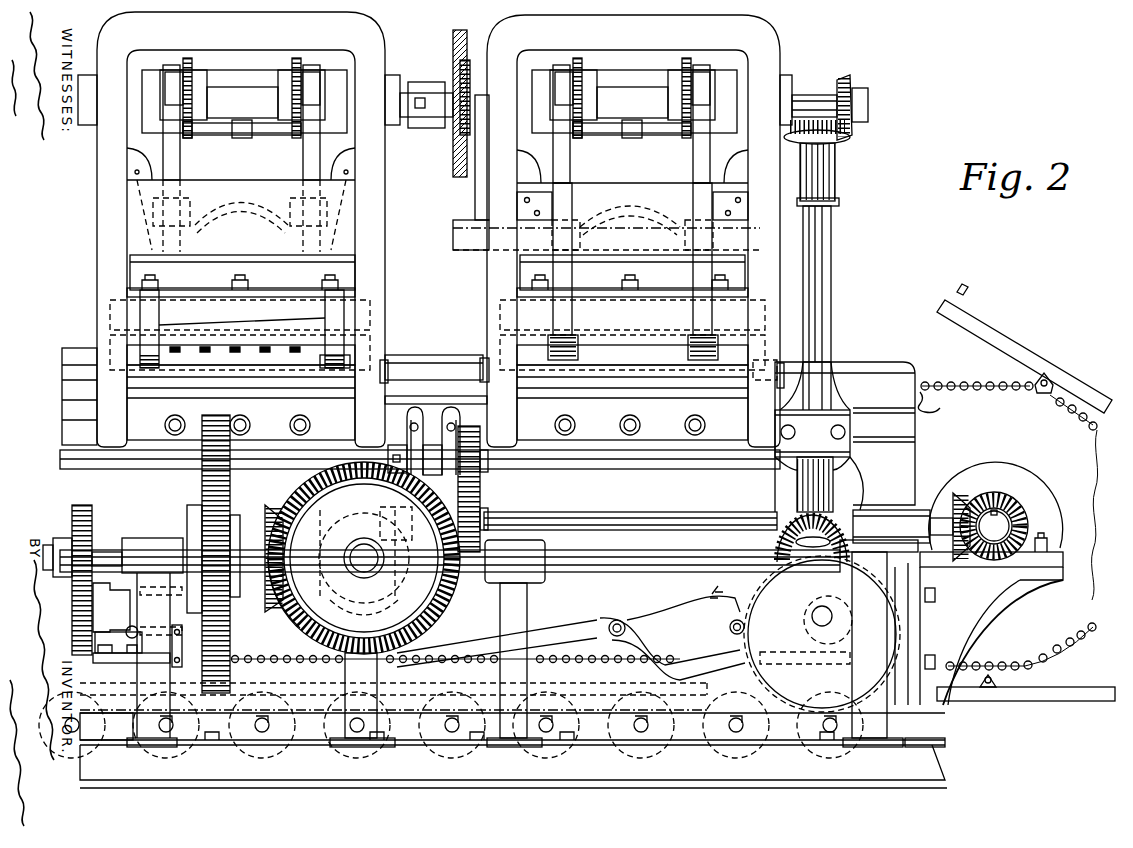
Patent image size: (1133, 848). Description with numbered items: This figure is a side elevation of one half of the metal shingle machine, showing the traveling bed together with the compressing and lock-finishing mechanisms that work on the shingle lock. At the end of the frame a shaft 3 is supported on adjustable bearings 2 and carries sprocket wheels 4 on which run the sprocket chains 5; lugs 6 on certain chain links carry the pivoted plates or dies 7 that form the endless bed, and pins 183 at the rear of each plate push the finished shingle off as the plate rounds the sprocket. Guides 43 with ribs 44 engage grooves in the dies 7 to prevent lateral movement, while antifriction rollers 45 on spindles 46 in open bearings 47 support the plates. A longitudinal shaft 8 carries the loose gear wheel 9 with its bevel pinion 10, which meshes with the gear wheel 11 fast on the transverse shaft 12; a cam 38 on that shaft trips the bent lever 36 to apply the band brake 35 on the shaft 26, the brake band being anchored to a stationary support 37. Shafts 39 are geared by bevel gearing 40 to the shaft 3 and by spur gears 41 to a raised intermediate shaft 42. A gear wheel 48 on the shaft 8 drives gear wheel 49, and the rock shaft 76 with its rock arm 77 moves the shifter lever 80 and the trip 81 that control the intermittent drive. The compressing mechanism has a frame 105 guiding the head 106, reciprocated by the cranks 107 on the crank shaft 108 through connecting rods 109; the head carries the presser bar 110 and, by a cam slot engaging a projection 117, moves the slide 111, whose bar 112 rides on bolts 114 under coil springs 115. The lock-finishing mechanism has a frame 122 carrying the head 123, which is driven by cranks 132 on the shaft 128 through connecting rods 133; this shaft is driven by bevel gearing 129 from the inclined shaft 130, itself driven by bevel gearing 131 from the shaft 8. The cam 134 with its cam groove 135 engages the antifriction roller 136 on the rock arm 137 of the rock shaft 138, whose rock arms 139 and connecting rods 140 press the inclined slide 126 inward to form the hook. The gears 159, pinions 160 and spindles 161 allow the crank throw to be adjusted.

The frame 105 is at (370, 35).
The cranks 107 is at (290, 68).
The crank shaft 108 is at (240, 87).
The gears 159 is at (189, 60).
The pinions 160 is at (190, 135).
The spindles 161 is at (266, 135).
The connecting rods 109 is at (305, 162).
The head 106 is at (355, 270).
The presser bar 110 is at (272, 300).
The bolts 114 is at (370, 320).
The bar 112 is at (176, 340).
The coil springs 115 is at (278, 372).
The projection 117 is at (336, 372).
The slide 111 is at (183, 380).
The antifriction roller 136 is at (452, 82).
The cam groove 135 is at (487, 42).
The cam 134 is at (453, 163).
The rock arm 137 is at (475, 198).
The ribs 44 is at (406, 357).
The guides 43 is at (436, 380).
The frame 122 is at (776, 40).
The cranks 132 is at (678, 68).
The shaft 128 is at (630, 87).
The connecting rods 133 is at (740, 172).
The bevel gearing 129 is at (852, 138).
The inclined shaft 130 is at (834, 300).
The bevel gearing 131 is at (784, 522).
The head 123 is at (520, 273).
The rock arms 139 is at (572, 273).
The rock shaft 138 is at (650, 245).
The slide 126 is at (652, 345).
The connecting rods 140 is at (572, 350).
The intermediate shaft 42 is at (168, 466).
The gear wheel 9 is at (232, 491).
The spur gears 41 is at (482, 492).
The longitudinal shaft 8 is at (604, 573).
The shafts 39 is at (724, 540).
The gear wheel 48 is at (72, 512).
The trip 81 is at (128, 540).
The gear wheel 49 is at (72, 612).
The rock shaft 76 is at (145, 632).
The rock arm 77 is at (160, 640).
The gear wheel 11 is at (440, 588).
The transverse shaft 12 is at (340, 532).
The cam 38 is at (290, 606).
The bevel pinion 10 is at (270, 586).
The stationary support 37 is at (690, 624).
The shaft 26 is at (822, 606).
The bevel gearing 40 is at (970, 500).
The shaft 3 is at (1030, 520).
The adjustable bearings 2 is at (1062, 548).
The band brake 35 is at (900, 630).
The plates or dies 7 is at (1040, 360).
The pins 183 is at (968, 292).
The lugs 6 is at (1052, 390).
The sprocket chains 5 is at (988, 392).
The sprocket wheels 4 is at (934, 406).
The shifter lever 80 is at (192, 668).
The antifriction rollers 45 is at (580, 738).
The bent lever 36 is at (688, 680).
The spindles 46 is at (745, 742).
The open bearings 47 is at (826, 742).